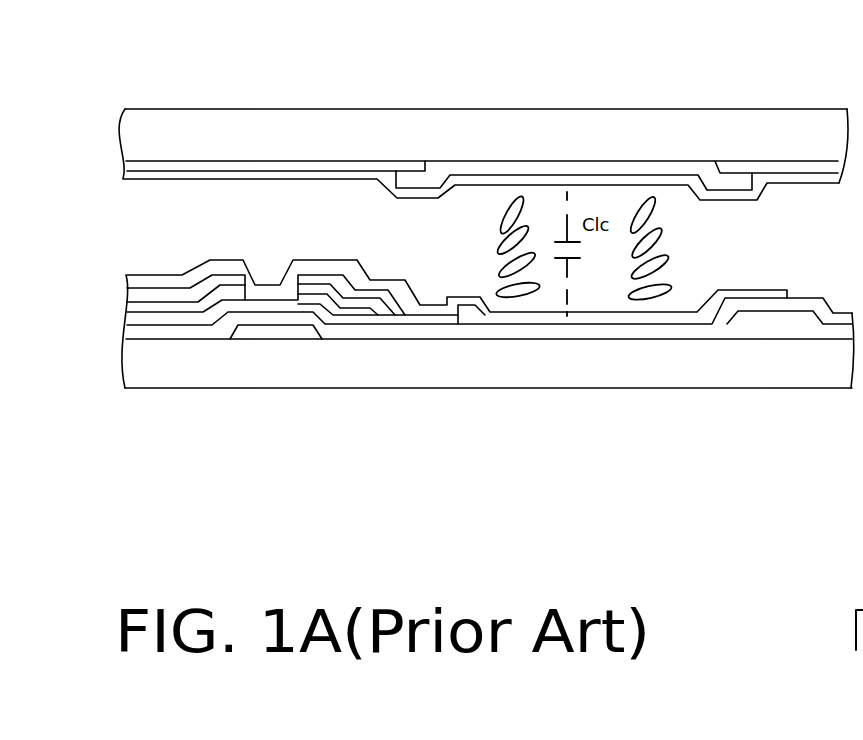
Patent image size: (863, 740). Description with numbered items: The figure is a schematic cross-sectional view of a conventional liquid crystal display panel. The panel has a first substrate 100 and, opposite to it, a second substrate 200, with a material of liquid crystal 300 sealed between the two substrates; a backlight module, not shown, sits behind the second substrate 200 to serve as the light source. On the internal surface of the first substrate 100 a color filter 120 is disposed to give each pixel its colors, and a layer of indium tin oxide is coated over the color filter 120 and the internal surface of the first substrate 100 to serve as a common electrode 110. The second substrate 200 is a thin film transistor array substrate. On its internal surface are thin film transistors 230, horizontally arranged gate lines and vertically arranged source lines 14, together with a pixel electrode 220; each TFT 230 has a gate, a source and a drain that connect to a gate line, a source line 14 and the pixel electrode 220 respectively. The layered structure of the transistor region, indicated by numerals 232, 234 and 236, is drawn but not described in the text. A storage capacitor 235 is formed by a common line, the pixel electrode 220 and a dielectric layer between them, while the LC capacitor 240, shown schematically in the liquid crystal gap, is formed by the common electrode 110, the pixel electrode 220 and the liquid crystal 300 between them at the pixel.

The first substrate 100 is at (148, 107).
The common electrode 110 is at (527, 185).
The color filter 120 is at (656, 170).
The LC capacitor 240 is at (577, 207).
The material of liquid crystal 300 is at (665, 250).
The second substrate 200 is at (583, 390).
The pixel electrode 220 is at (550, 316).
The thin film transistor 230 is at (263, 321).
The gate insulating layer 232 is at (298, 332).
The source electrode 234 is at (318, 278).
The drain electrode 236 is at (228, 272).
The storage capacitor 235 is at (763, 318).
The source line 14 is at (158, 297).